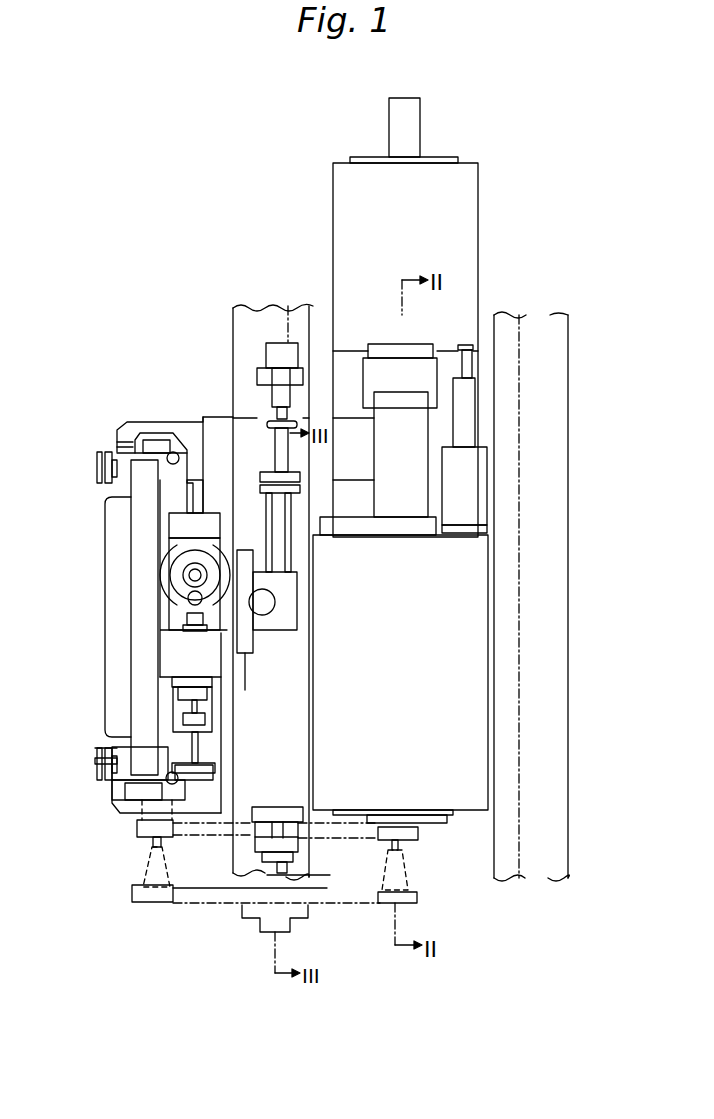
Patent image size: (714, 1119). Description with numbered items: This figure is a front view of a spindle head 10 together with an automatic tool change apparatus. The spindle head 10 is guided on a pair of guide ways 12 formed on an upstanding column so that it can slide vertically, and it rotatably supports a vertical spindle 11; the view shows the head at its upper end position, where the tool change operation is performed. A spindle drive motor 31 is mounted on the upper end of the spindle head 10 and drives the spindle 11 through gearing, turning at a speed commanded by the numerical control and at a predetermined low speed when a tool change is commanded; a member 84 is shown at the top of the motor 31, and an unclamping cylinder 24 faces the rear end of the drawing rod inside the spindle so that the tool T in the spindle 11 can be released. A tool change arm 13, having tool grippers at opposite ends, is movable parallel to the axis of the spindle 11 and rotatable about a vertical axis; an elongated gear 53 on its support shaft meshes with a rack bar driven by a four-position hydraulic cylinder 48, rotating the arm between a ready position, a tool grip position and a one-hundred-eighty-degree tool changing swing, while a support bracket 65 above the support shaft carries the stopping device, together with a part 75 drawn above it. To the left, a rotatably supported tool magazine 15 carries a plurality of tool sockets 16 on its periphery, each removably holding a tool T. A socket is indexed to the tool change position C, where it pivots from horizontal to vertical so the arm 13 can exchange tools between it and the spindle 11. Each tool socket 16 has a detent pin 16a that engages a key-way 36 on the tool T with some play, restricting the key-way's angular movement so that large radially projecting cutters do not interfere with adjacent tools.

The drive shaft 84 is at (410, 143).
The spindle drive motor 31 is at (462, 226).
The unclamping cylinder 24 is at (418, 372).
The spindle head 10 is at (478, 703).
The guide ways 12 is at (305, 862).
The coupling block 75 is at (272, 355).
The support bracket 65 is at (242, 372).
The elongated gear 53 is at (283, 560).
The hydraulic cylinder 48 is at (269, 648).
The tool magazine 15 is at (148, 408).
The tool socket 16 is at (122, 482).
The tool T is at (97, 468).
The detent pin 16a is at (98, 752).
The key-way 36 is at (98, 762).
The tool change position C is at (97, 808).
The tool change arm 13 is at (292, 830).
The spindle 11 is at (418, 821).